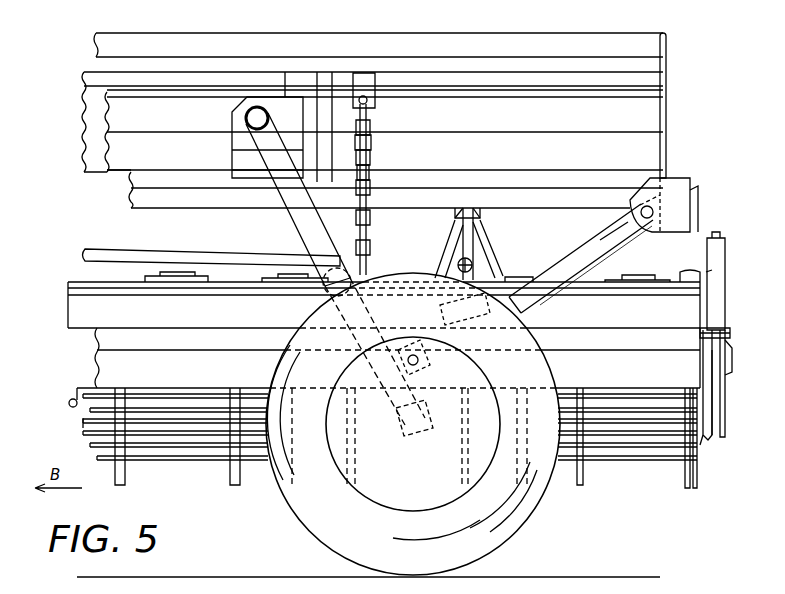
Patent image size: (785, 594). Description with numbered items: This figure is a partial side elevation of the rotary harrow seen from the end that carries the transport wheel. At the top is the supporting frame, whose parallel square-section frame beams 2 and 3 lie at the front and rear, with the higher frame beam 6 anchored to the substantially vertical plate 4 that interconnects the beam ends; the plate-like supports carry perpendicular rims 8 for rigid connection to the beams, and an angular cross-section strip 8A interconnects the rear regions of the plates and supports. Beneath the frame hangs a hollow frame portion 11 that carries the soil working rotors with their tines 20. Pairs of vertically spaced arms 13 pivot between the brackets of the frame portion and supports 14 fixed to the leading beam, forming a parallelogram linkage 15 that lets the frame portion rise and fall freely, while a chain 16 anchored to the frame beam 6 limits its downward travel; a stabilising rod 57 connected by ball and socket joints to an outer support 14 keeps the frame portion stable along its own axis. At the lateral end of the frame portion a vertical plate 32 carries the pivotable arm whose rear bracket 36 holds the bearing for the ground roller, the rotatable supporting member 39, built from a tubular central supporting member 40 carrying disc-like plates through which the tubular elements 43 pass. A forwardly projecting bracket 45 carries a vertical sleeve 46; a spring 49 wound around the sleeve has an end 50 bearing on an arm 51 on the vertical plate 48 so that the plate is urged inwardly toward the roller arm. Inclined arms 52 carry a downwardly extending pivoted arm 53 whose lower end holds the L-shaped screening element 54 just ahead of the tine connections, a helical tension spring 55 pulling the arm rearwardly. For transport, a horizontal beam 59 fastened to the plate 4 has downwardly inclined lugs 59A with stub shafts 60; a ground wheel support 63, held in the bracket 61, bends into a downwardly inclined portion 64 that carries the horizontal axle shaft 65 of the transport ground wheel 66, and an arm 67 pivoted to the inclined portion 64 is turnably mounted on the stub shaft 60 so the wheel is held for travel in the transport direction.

The frame beam 2 is at (170, 178).
The frame beam 3 is at (92, 170).
The vertical plate 4 is at (668, 43).
The frame beam 6 is at (515, 78).
The perpendicular rim 8 is at (317, 84).
The angular cross-section strip 8A is at (118, 115).
The hollow frame portion 11 is at (70, 305).
The arm 13 is at (372, 157).
The support 14 is at (356, 180).
The parallelogram linkage 15 is at (376, 183).
The chain 16 is at (375, 114).
The tine 20 is at (232, 490).
The vertical plate 32 is at (725, 240).
The bracket 36 is at (710, 440).
The rotatable supporting member 39 is at (83, 424).
The tubular central supporting member 40 is at (70, 400).
The tubular element 43 is at (196, 446).
The bracket 45 is at (694, 280).
The vertical sleeve 46 is at (718, 298).
The vertical plate 48 is at (725, 400).
The spring 49 is at (730, 333).
The spring end 50 is at (735, 345).
The arm 51 is at (733, 368).
The arm 52 is at (482, 242).
The arm 53 is at (478, 222).
The screening element 54 is at (95, 365).
The helical tension spring 55 is at (478, 264).
The stabilising rod 57 is at (128, 250).
The horizontal beam 59 is at (466, 262).
The downwardly inclined lug 59A is at (676, 216).
The stub shaft 60 is at (584, 258).
The bracket 61 is at (232, 107).
The ground wheel support 63 is at (290, 214).
The downwardly inclined portion 64 is at (312, 232).
The horizontal axle shaft 65 is at (409, 431).
The transport ground wheel 66 is at (302, 518).
The arm 67 is at (598, 240).